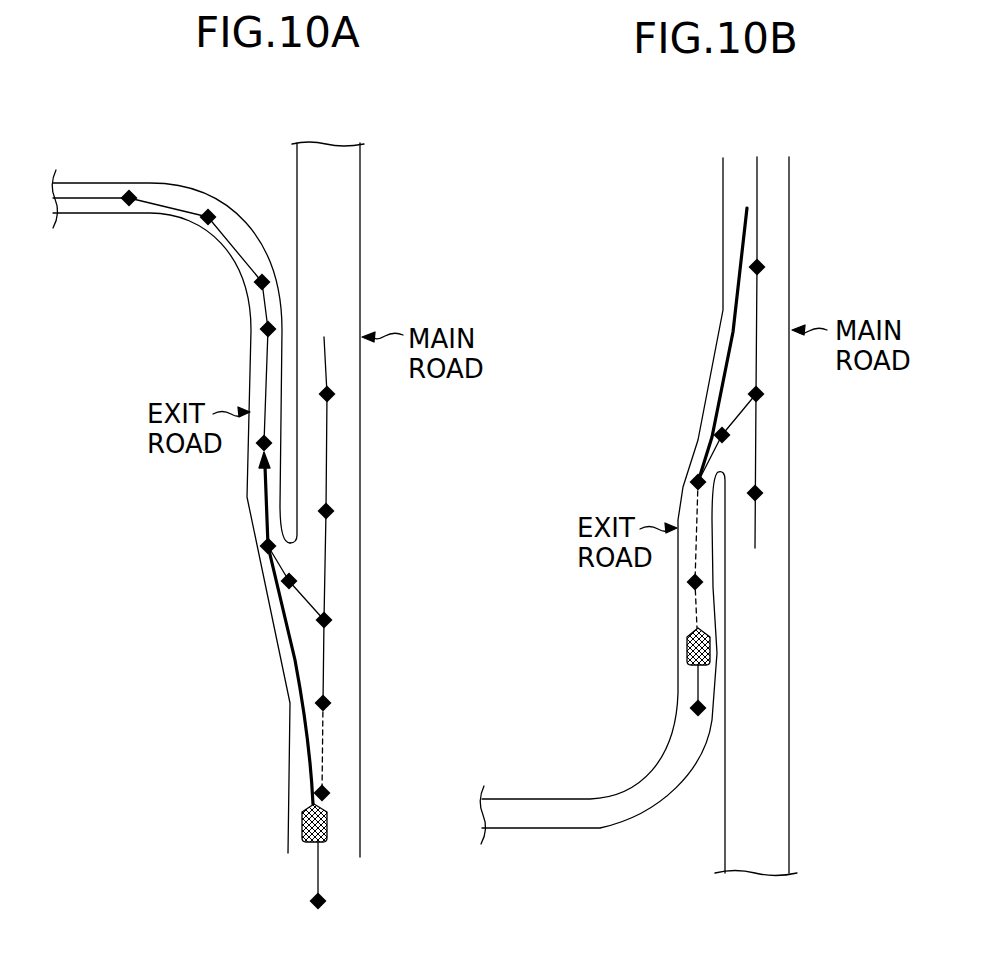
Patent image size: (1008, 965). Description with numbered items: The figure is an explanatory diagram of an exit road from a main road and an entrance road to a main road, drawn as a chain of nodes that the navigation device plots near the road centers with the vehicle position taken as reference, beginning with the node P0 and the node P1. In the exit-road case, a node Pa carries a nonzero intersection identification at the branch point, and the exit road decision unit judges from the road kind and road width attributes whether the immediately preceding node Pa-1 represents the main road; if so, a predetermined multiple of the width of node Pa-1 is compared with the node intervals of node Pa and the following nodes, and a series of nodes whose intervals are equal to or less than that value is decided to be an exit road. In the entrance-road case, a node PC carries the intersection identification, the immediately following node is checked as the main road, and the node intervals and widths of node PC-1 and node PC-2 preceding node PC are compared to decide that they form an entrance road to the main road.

In FIG. 10A, the node Pa is at (333, 620).
In FIG. 10A, the node Pa-1 is at (332, 703).
In FIG. 10A, the node P1 is at (331, 793).
In FIG. 10B, the node P1 is at (688, 583).
In FIG. 10A, the node P0 is at (340, 879).
In FIG. 10B, the node P0 is at (690, 708).
In FIG. 10B, the node Pc PC is at (765, 395).
In FIG. 10B, the node Pc-1 PC-1 is at (714, 436).
In FIG. 10B, the node Pc-2 PC-2 is at (690, 482).